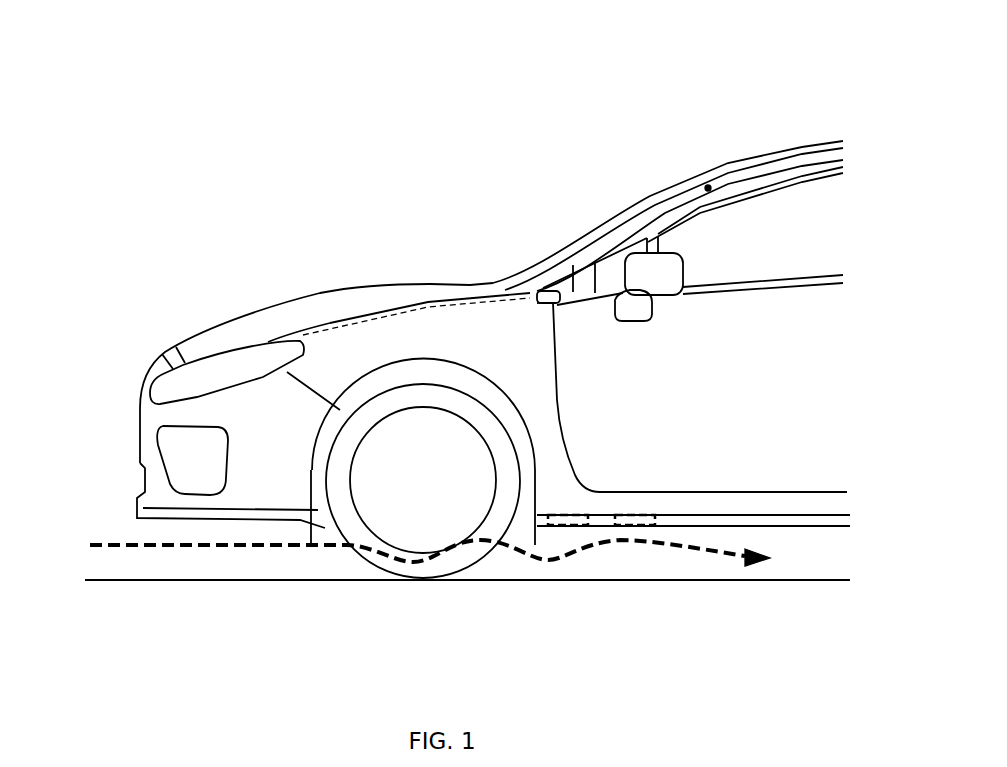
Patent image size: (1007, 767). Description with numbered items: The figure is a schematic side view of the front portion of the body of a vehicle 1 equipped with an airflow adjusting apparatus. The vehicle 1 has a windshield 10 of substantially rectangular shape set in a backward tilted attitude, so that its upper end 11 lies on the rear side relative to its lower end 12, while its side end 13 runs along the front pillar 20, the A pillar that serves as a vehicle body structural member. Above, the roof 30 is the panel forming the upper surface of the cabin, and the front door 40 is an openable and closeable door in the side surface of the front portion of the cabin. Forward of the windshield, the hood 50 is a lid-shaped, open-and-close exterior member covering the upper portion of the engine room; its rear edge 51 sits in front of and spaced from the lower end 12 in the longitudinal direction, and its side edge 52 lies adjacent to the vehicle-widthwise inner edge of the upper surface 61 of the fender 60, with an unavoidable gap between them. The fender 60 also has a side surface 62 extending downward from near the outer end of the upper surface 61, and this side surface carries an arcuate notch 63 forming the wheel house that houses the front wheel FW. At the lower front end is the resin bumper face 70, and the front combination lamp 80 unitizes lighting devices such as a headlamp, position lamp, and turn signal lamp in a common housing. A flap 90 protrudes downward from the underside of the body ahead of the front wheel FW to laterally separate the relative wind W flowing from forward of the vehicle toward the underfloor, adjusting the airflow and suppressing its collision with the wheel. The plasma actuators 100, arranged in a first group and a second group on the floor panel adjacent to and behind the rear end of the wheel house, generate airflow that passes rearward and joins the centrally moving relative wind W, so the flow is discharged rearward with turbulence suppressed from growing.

The vehicle 1 is at (236, 138).
The windshield 10 is at (650, 195).
The upper end 11 is at (728, 163).
The lower end 12 is at (495, 283).
The side end 13 is at (673, 192).
The front pillar 20 is at (843, 157).
The roof 30 is at (802, 147).
The front door 40 is at (748, 395).
The hood 50 is at (320, 293).
The rear edge 51 is at (470, 285).
The side edge 52 is at (301, 330).
The fender 60 is at (150, 398).
The upper surface 61 is at (428, 302).
The side surface 62 is at (505, 362).
The arcuate notch 63 is at (423, 377).
The bumper face 70 is at (240, 492).
The front combination lamp 80 is at (183, 365).
The flap 90 is at (305, 542).
The plasma actuator 100 is at (568, 522).
The front wheel FW is at (382, 570).
The relative wind W is at (412, 550).